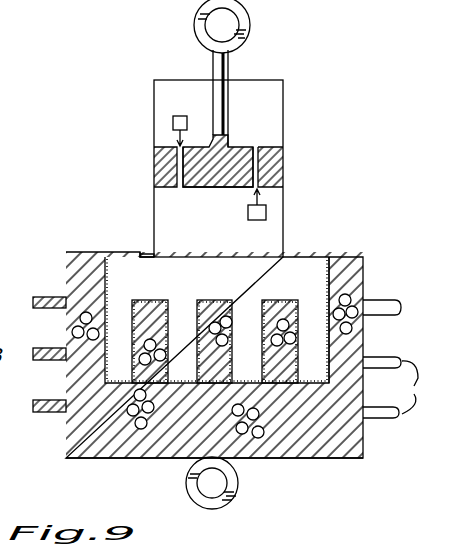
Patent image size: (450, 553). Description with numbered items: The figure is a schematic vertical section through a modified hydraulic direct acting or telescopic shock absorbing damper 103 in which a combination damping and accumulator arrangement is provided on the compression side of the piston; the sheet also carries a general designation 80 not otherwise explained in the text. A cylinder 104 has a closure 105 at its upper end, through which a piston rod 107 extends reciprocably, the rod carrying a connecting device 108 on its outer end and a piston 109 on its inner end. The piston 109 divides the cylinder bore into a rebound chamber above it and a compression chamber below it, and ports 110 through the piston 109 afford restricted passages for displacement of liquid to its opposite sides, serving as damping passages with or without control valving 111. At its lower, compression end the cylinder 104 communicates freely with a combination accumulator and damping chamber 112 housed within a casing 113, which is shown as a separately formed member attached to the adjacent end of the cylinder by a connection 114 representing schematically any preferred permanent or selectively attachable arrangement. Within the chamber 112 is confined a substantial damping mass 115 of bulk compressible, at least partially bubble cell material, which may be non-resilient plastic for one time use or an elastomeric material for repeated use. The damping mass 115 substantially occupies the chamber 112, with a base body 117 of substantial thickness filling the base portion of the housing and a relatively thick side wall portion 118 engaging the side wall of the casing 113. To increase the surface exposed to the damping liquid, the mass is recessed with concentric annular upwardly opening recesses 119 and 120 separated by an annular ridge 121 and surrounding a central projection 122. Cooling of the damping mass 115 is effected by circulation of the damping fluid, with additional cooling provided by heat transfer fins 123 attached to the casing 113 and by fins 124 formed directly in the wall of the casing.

The apparatus 80 is at (22, 4).
The direct acting or telescopic shock absorbing damper 103 is at (355, 227).
The cylinder 104 is at (284, 130).
The closure 105 is at (284, 82).
The piston rod 107 is at (230, 66).
The connecting device 108 is at (250, 26).
The piston 109 is at (214, 188).
The ports 110 is at (166, 166).
The control valving 111 is at (173, 124).
The combination accumulator and damping chamber 112 is at (317, 273).
The casing 113 is at (65, 262).
The connection 114 is at (127, 252).
The damping mass 115 is at (78, 457).
The base body 117 is at (270, 458).
The side wall portion 118 is at (366, 329).
The annular recess 119 is at (310, 355).
The annular recess 120 is at (244, 312).
The annular ridge 121 is at (270, 308).
The central projection 122 is at (206, 300).
The heat transfer fins 123 is at (55, 348).
The fins 124 is at (398, 306).